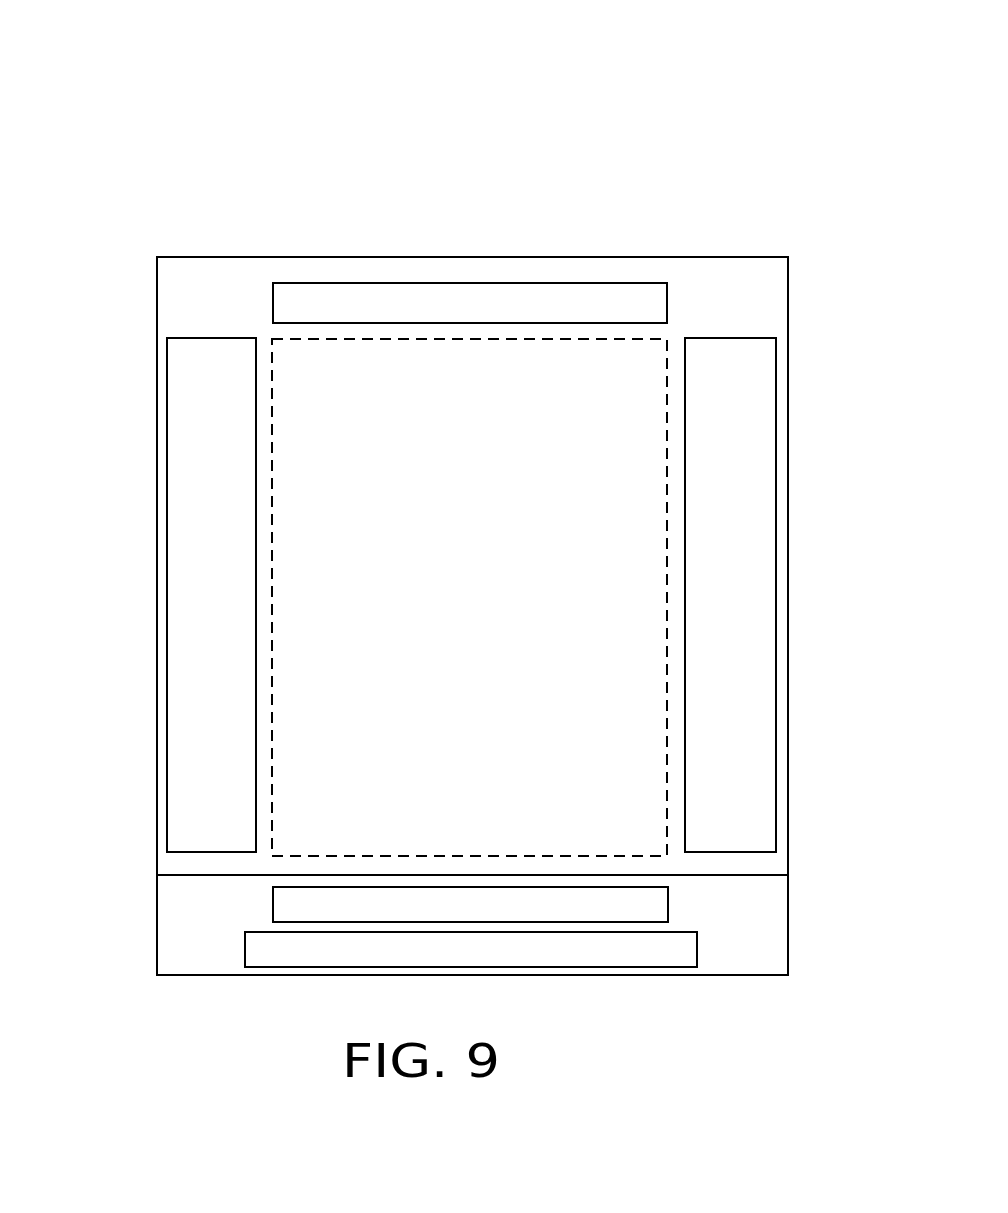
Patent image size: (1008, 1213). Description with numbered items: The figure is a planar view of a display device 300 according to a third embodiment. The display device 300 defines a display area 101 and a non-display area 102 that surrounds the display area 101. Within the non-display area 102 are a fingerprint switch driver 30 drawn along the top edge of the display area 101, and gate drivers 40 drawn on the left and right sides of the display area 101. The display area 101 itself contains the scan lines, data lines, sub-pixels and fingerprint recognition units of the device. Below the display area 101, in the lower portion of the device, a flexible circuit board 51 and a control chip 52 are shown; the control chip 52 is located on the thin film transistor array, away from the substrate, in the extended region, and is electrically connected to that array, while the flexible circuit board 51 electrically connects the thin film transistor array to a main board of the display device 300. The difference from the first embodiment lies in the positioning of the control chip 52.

The display device 300 is at (396, 66).
The fingerprint switch driver 30 is at (595, 282).
The non-display area 102 is at (755, 285).
The display area 101 is at (665, 337).
The gate driver 40 is at (166, 473).
The control chip 52 is at (668, 897).
The flexible circuit board 51 is at (697, 953).